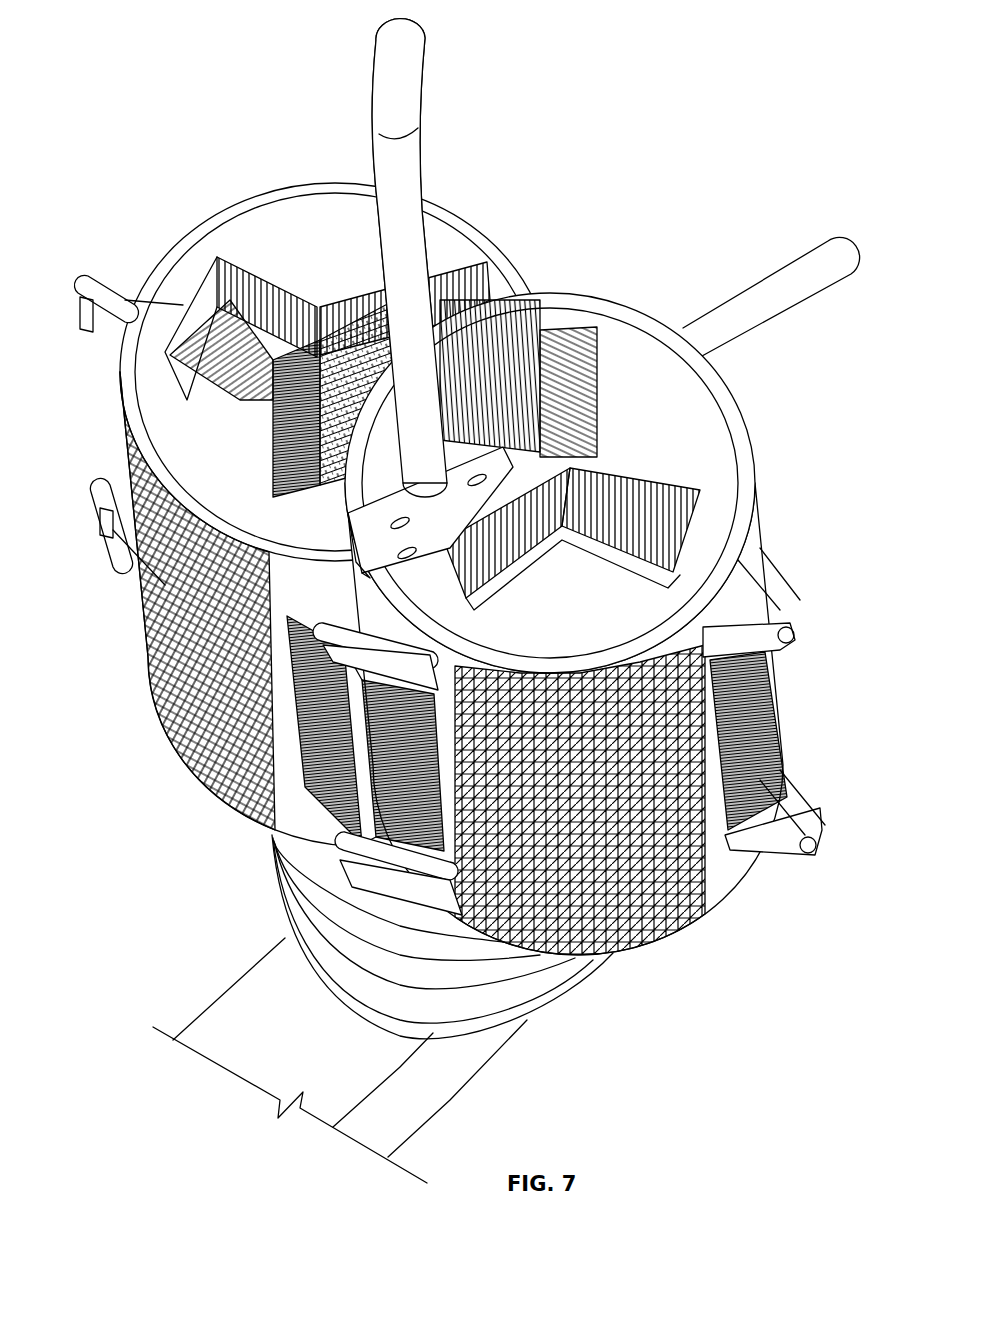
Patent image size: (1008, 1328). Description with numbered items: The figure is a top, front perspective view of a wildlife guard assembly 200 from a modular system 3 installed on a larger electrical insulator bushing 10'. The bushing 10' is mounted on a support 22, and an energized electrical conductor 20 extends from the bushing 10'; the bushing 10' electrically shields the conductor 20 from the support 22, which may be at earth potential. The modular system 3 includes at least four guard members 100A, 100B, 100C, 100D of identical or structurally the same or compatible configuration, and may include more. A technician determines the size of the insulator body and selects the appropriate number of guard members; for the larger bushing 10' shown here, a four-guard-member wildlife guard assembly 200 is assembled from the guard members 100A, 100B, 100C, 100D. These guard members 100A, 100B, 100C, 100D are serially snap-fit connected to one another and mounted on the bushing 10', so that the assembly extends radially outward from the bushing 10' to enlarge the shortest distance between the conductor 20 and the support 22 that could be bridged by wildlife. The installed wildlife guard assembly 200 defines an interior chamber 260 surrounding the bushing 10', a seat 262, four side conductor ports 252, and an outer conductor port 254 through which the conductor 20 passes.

The wildlife guard assembly 200 is at (190, 52).
The modular system 3 is at (548, 88).
The electrical conductor 20 is at (410, 65).
The support 22 is at (477, 1058).
The bushing 10' is at (447, 942).
The guard member 100A is at (165, 393).
The guard member 100B is at (296, 205).
The guard member 100C is at (617, 338).
The guard member 100D is at (637, 612).
The side conductor port 252 is at (762, 397).
The outer conductor port 254 is at (448, 340).
The interior chamber 260 is at (362, 483).
The seat 262 is at (405, 912).